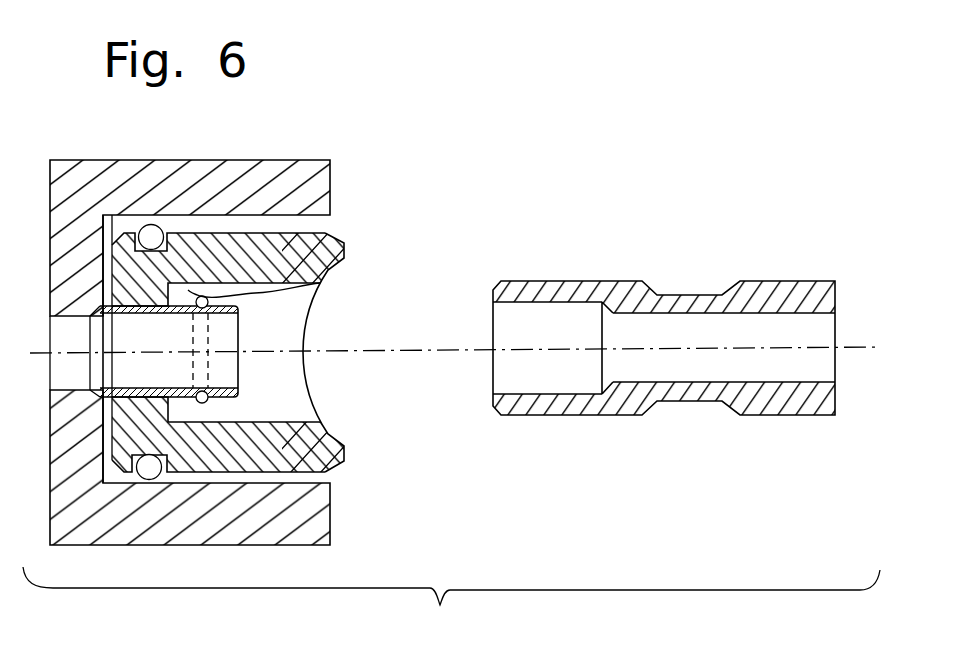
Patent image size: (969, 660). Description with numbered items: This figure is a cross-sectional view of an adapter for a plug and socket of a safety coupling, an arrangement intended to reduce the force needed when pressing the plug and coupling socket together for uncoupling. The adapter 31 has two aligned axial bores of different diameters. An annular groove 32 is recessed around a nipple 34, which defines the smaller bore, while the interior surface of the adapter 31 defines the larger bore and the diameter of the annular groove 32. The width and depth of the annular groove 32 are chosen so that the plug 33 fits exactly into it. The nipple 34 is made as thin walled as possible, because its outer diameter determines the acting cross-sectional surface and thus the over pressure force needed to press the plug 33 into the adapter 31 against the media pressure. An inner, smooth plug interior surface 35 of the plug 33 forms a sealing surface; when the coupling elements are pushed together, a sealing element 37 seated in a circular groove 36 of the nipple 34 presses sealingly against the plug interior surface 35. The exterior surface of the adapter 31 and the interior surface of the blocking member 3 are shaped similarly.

The blocking member 3 is at (323, 159).
The adapter 31 is at (323, 466).
The annular groove 32 is at (327, 236).
The plug 33 is at (625, 268).
The nipple 34 is at (225, 403).
The plug interior surface 35 is at (522, 395).
The circular groove 36 is at (200, 333).
The sealing element 37 is at (237, 389).